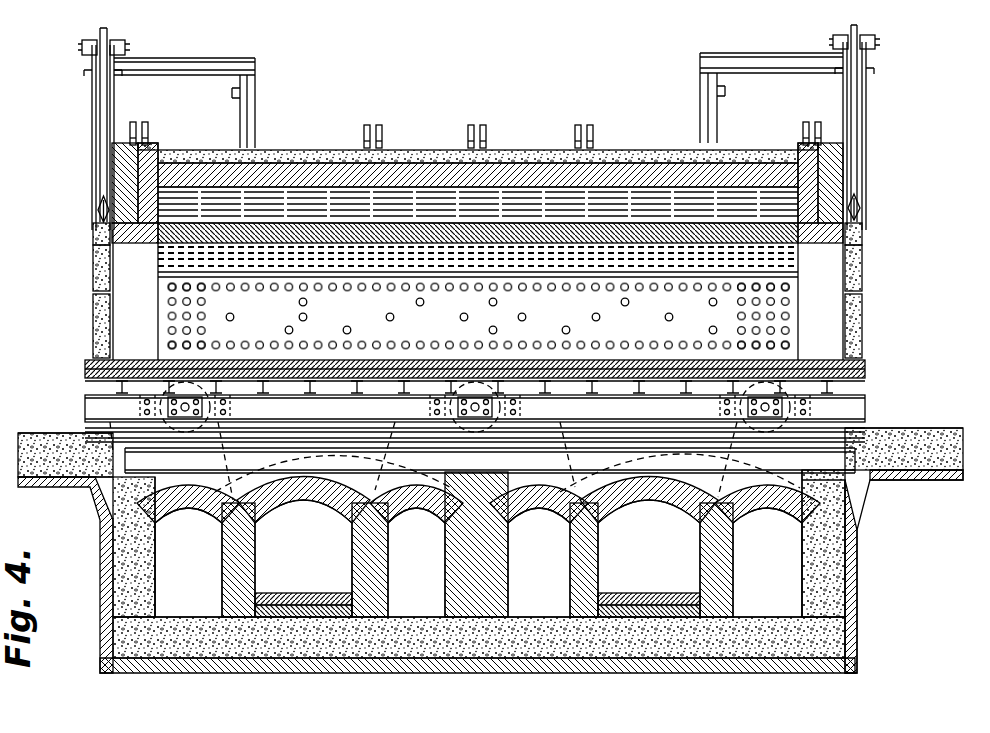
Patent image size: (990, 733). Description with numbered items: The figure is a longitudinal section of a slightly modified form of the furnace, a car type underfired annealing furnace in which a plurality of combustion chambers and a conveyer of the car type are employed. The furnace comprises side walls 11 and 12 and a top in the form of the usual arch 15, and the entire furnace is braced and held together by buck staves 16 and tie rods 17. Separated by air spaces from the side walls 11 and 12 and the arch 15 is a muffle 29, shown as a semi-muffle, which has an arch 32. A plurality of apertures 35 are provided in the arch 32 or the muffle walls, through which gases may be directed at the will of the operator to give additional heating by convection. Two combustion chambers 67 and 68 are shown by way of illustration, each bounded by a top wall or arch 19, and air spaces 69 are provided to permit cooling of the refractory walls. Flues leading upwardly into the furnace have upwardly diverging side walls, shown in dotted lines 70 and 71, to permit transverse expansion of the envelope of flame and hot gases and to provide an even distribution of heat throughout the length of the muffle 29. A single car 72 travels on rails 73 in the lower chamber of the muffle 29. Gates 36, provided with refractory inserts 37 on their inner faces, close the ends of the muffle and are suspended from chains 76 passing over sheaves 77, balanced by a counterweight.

The side wall 11 is at (149, 146).
The side wall 12 is at (806, 143).
The arch 15 is at (508, 176).
The buck staves 16 is at (374, 134).
The tie rods 17 is at (575, 134).
The top wall or arch 19 is at (337, 507).
The muffle 29 is at (478, 295).
The arch 32 is at (360, 232).
The apertures 35 is at (275, 322).
The gates 36 is at (93, 272).
The refractory material 37 is at (93, 335).
The combustion chamber 67 is at (303, 558).
The combustion chamber 68 is at (649, 558).
The air spaces 69 is at (479, 562).
The upwardly diverging side wall 70 is at (322, 440).
The upwardly diverging side wall 71 is at (398, 410).
The car 72 is at (85, 370).
The rails 73 is at (352, 411).
The chains 76 is at (98, 206).
The sheaves 77 is at (108, 38).